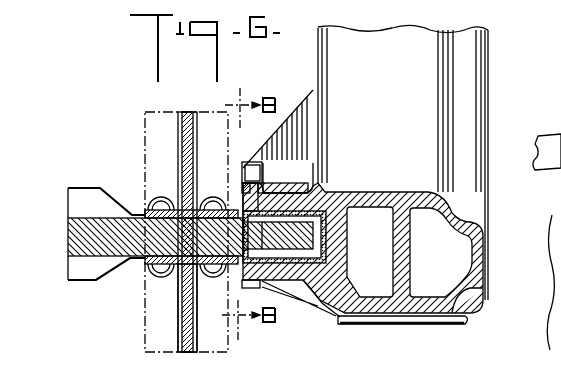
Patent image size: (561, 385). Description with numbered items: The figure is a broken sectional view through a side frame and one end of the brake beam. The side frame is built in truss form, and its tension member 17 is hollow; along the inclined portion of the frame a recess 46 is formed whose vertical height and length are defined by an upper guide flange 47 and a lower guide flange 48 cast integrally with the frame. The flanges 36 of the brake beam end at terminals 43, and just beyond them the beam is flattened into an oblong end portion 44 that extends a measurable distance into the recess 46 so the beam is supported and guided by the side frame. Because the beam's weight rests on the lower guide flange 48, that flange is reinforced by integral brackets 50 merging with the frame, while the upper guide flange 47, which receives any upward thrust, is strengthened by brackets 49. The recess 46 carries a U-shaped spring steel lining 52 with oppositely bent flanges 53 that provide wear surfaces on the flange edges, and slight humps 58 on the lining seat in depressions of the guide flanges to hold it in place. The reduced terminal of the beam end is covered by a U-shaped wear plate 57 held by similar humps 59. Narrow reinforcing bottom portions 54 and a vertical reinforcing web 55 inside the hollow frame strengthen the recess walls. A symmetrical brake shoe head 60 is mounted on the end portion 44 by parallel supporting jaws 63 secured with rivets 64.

The tension member 17 is at (488, 252).
The flanges of the brake beam 36 is at (77, 187).
The terminals of the flanges 43 is at (103, 193).
The end portion of the beam 44 is at (168, 274).
The recess 46 is at (329, 180).
The upper guide flange 47 is at (275, 190).
The lower guide flange 48 is at (306, 290).
The brackets 49 is at (302, 104).
The brackets 50 is at (300, 303).
The hard metal lining 52 is at (330, 215).
The flanges of the lining 53 is at (243, 162).
The reinforcing bottom portions 54 is at (470, 302).
The vertical reinforcing web 55 is at (410, 262).
The U-shaped wear plate 57 is at (330, 248).
The humps 58 is at (287, 197).
The humps 59 is at (246, 212).
The brake shoe head 60 is at (196, 100).
The supporting jaws 63 is at (143, 212).
The rivets 64 is at (158, 200).